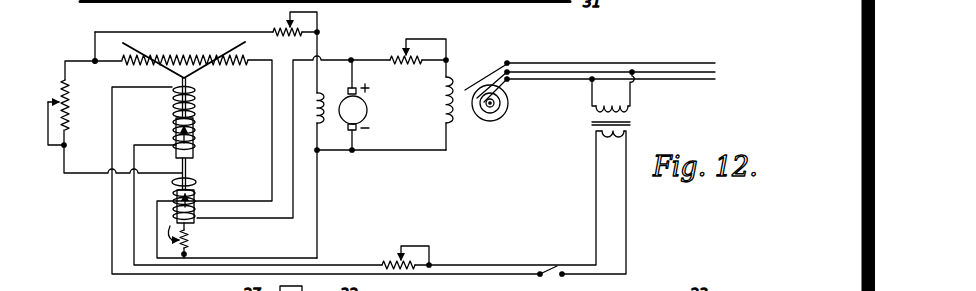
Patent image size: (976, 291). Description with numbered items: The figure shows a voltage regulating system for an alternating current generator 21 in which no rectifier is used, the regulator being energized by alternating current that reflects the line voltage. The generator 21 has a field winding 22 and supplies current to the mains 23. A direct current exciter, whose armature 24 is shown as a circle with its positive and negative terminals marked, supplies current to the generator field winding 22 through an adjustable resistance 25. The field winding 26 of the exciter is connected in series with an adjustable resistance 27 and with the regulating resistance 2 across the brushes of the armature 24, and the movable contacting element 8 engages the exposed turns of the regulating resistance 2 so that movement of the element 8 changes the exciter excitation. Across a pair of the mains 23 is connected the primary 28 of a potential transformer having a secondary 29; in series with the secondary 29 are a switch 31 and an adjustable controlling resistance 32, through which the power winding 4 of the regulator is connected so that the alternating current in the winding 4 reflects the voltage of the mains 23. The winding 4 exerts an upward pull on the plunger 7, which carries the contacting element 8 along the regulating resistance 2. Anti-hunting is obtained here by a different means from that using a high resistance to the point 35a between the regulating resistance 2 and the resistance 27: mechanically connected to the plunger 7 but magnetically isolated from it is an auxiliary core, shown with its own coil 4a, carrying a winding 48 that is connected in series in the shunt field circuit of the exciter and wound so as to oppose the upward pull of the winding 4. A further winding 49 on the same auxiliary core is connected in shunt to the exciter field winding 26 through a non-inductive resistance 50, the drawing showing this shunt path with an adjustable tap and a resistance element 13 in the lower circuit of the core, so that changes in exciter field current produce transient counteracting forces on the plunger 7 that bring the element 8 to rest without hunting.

The regulating resistance 2 is at (192, 57).
The movable contacting element 8 is at (197, 67).
The point between the regulating resistance and the field resistance 35a is at (93, 61).
The non-inductive resistance 50 is at (48, 105).
The adjustable resistance 27 is at (287, 21).
The adjustable resistance 25 is at (405, 52).
The field winding of the exciter 26 is at (311, 104).
The armature 24 is at (368, 107).
The field winding 22 is at (441, 100).
The generator 21 is at (509, 108).
The mains 23 is at (655, 63).
The primary 28 is at (612, 91).
The secondary 29 is at (626, 135).
The power winding 4 is at (197, 108).
The plunger 7 is at (193, 150).
The winding 49 is at (198, 180).
The auxiliary solenoid coil 4a is at (197, 198).
The resistor 13 is at (191, 240).
The winding 48 is at (169, 237).
The adjustable controlling resistance 32 is at (399, 258).
The switch 31 is at (552, 272).